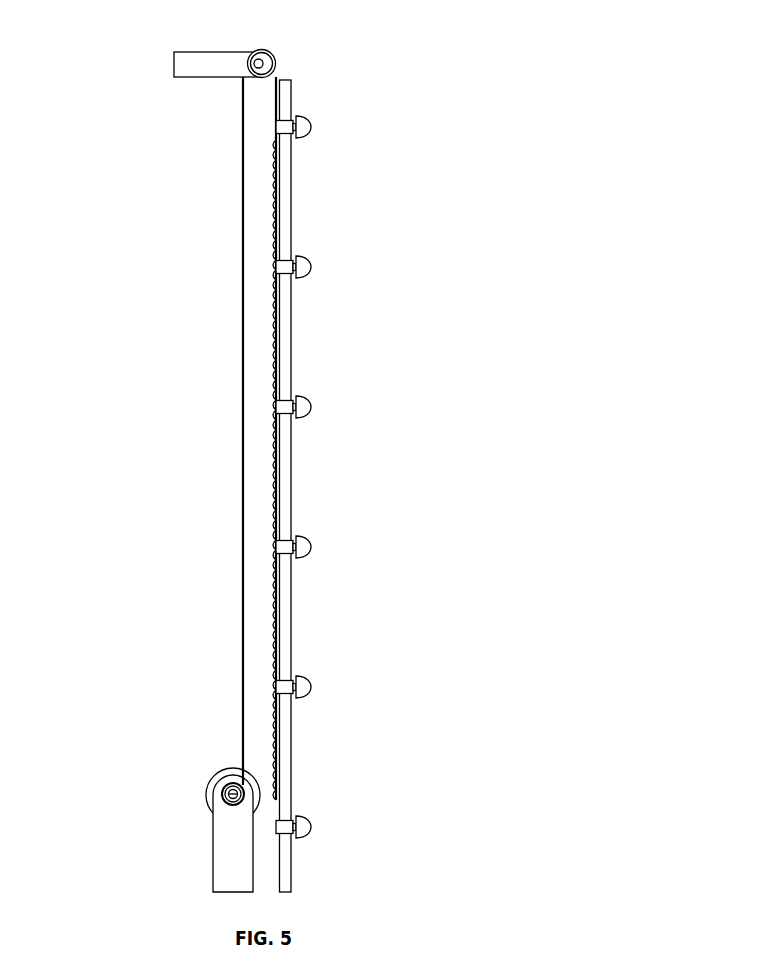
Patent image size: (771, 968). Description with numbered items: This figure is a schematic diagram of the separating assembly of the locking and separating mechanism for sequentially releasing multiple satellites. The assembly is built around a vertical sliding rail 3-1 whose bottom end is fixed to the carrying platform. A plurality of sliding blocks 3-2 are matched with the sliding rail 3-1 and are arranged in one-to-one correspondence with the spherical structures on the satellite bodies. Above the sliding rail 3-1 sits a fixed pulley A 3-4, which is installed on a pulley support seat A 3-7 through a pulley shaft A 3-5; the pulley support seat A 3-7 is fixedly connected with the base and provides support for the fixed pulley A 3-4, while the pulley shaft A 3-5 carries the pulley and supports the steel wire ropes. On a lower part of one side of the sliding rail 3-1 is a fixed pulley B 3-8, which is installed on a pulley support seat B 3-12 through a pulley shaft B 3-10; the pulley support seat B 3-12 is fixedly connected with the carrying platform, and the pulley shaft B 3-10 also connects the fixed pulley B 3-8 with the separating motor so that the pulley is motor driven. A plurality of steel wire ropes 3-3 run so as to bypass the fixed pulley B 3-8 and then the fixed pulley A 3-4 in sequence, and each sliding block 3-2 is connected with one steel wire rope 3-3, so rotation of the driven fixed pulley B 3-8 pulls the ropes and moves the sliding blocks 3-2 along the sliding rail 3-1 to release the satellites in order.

The sliding rail 3-1 is at (283, 797).
The sliding blocks 3-2 is at (282, 552).
The steel wire ropes 3-3 is at (275, 242).
The fixed pulley A 3-4 is at (277, 60).
The pulley shaft A 3-5 is at (254, 63).
The pulley support seat A 3-7 is at (208, 65).
The fixed pulley B 3-8 is at (225, 770).
The pulley shaft B 3-10 is at (228, 793).
The pulley support seat B 3-12 is at (235, 845).